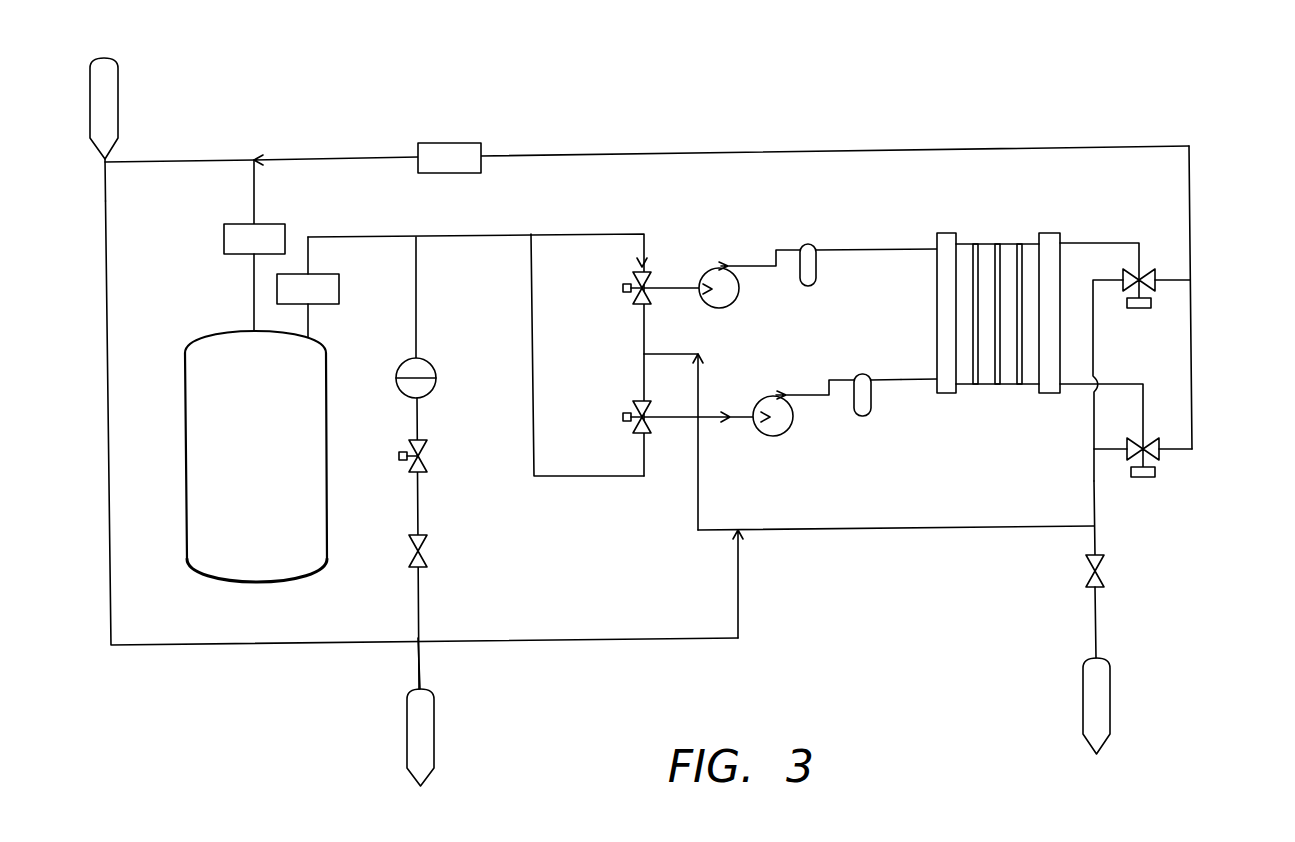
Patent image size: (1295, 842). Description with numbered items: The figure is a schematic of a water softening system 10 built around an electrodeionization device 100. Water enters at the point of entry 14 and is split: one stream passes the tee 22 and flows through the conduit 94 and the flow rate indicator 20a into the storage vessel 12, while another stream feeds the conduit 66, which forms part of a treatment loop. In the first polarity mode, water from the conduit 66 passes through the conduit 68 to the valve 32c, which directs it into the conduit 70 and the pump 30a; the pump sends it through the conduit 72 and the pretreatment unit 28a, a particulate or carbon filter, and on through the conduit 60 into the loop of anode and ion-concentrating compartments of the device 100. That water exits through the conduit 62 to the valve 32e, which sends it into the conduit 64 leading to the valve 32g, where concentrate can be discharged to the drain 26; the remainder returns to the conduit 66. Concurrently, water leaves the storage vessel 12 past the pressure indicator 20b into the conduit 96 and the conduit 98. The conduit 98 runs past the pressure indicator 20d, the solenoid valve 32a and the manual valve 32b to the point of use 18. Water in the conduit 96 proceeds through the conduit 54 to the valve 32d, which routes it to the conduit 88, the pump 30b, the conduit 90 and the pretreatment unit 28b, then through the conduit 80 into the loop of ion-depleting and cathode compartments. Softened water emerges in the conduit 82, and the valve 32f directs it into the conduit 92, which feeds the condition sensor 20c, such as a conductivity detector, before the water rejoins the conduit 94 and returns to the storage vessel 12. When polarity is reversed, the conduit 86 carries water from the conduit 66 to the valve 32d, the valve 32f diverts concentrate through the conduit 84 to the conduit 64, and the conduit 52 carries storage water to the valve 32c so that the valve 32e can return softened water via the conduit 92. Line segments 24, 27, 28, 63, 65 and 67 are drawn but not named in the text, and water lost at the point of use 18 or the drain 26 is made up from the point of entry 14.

The fluid handling system 10 is at (422, 59).
The storage vessel 12 is at (184, 480).
The point of entry 14 is at (117, 78).
The point of use 18 is at (407, 725).
The flow rate indicator 20a is at (222, 243).
The pressure indicator 20b is at (325, 273).
The condition sensor 20c is at (462, 172).
The pressure indicator 20d is at (431, 364).
The tee 22 is at (253, 158).
The junction 24 is at (105, 166).
The drain 26 is at (1103, 658).
The vent line 27 is at (145, 160).
The bypass line 28 is at (107, 347).
The pretreatment unit 28a is at (814, 280).
The pretreatment unit 28b is at (863, 415).
The pump 30a is at (730, 303).
The pump 30b is at (785, 432).
The solenoid valve 32a is at (425, 472).
The manual valve 32b is at (425, 567).
The valve 32c is at (638, 305).
The valve 32d is at (638, 433).
The valve 32e is at (1153, 270).
The valve 32f is at (1156, 443).
The valve 32g is at (1098, 552).
The conduit 52 is at (618, 233).
The conduit 54 is at (532, 388).
The conduit 60 is at (833, 248).
The conduit 62 is at (253, 328).
The heat exchanger outlet line 63 is at (1102, 240).
The conduit 64 is at (308, 337).
The return line 65 is at (1092, 312).
The conduit 66 is at (950, 527).
The drain line 67 is at (1093, 507).
The conduit 68 is at (645, 340).
The conduit 70 is at (652, 285).
The conduit 72 is at (740, 263).
The conduit 80 is at (883, 382).
The conduit 82 is at (1142, 387).
The conduit 84 is at (1096, 452).
The conduit 86 is at (640, 375).
The conduit 88 is at (712, 413).
The conduit 90 is at (830, 382).
The conduit 92 is at (1188, 192).
The conduit 94 is at (253, 200).
The conduit 96 is at (520, 233).
The conduit 98 is at (415, 292).
The electrodeionization device 100 is at (975, 243).